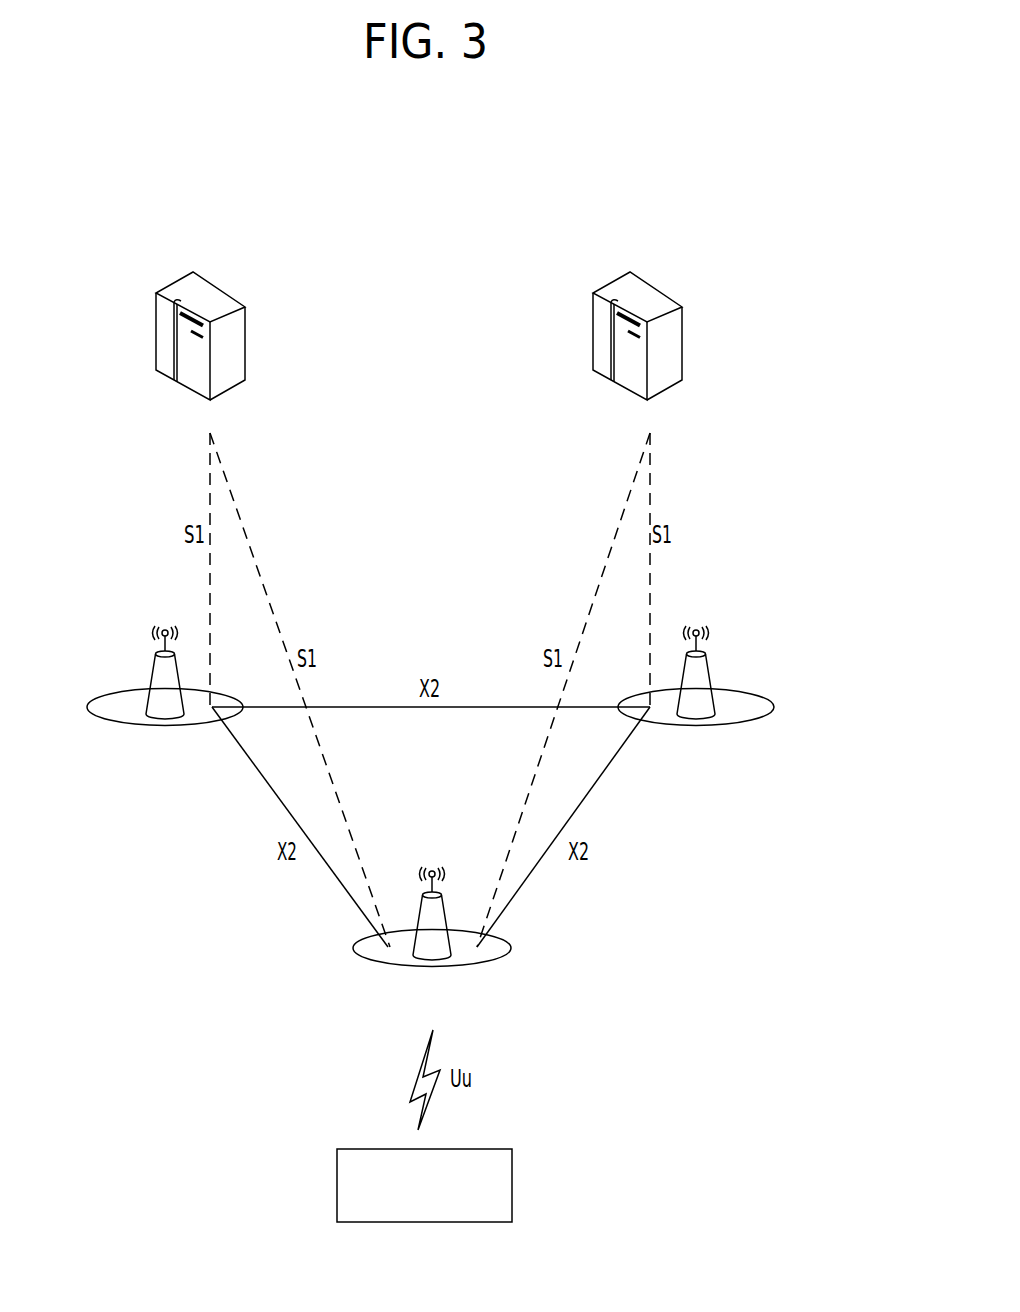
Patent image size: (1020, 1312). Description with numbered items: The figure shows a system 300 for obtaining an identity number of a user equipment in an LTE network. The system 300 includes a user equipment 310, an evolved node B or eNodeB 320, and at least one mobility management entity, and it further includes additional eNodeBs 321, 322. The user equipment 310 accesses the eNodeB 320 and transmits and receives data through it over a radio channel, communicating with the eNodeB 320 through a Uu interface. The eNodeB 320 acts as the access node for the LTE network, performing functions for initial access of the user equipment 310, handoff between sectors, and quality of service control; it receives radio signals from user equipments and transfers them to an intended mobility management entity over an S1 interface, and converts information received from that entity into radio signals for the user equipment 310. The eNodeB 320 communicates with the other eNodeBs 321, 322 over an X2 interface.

The system 300 is at (754, 199).
The user equipment 310 is at (512, 1183).
The evolved node B (eNodeB) 320 is at (443, 913).
The eNodeB 321 is at (152, 670).
The eNodeB 322 is at (709, 670).